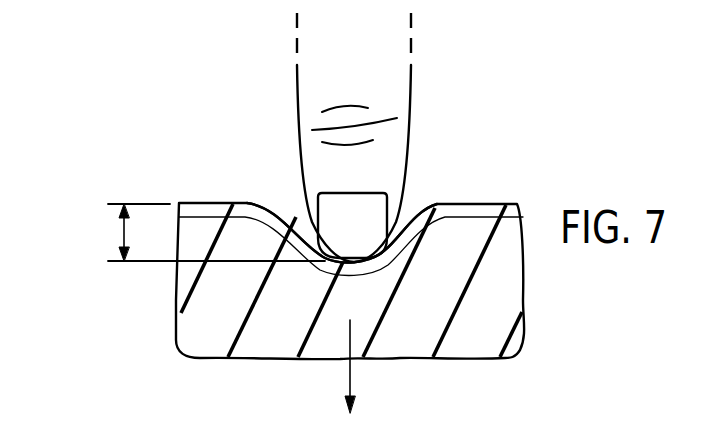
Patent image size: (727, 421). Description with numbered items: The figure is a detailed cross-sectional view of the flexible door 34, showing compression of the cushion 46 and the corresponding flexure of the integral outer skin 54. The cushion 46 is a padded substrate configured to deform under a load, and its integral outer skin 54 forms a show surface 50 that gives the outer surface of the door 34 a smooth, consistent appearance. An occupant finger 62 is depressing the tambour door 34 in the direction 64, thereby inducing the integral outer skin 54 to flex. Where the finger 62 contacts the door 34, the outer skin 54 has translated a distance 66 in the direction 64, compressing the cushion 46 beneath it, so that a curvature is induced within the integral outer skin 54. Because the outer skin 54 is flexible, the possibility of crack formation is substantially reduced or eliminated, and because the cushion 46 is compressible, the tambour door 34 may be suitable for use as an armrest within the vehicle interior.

The flexible door 34 is at (482, 135).
The cushion 46 is at (215, 342).
The show surface 50 is at (272, 204).
The integral outer skin 54 is at (208, 207).
The occupant finger 62 is at (415, 106).
The direction 64 is at (352, 373).
The distance 66 is at (124, 233).